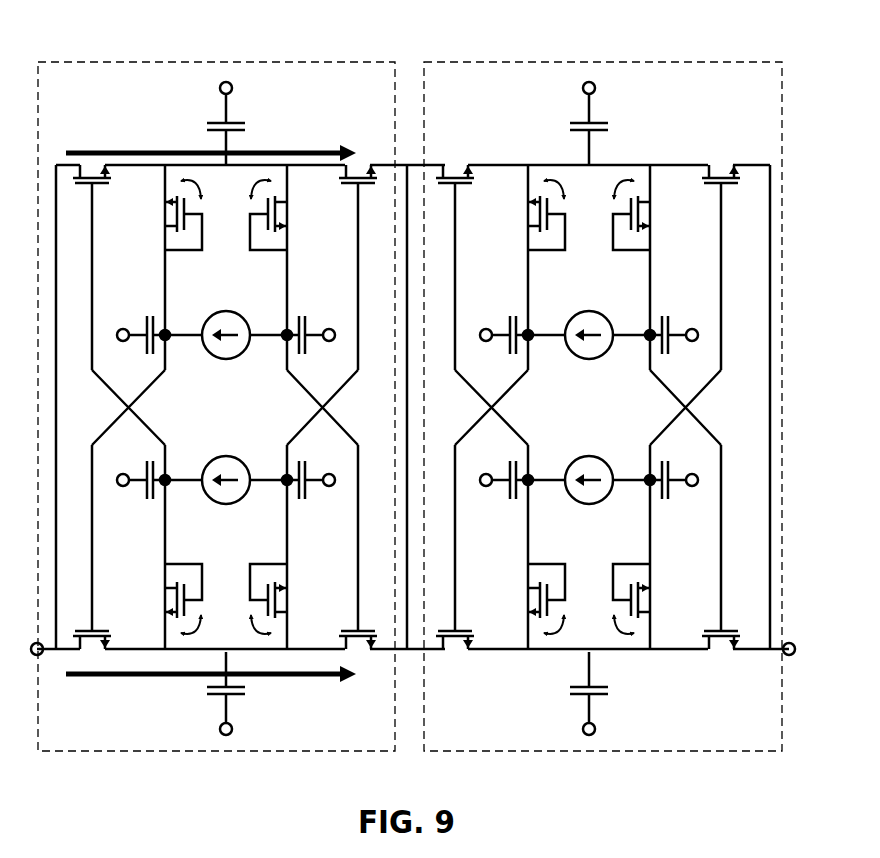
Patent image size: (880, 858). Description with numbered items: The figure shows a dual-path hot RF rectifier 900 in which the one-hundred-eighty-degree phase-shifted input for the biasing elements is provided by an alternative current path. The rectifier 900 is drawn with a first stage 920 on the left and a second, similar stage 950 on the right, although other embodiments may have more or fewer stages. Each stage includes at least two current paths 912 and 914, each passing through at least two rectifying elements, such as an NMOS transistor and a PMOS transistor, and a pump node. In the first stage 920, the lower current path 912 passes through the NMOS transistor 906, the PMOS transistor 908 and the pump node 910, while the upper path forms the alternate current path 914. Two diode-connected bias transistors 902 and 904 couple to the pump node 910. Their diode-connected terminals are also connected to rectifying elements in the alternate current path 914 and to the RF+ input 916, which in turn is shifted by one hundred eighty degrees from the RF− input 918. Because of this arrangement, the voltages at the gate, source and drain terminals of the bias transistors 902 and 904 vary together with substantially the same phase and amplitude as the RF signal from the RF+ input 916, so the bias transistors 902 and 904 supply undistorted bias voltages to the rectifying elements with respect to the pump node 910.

The dual-path hot RF rectifier 900 is at (106, 14).
The first stage 920 is at (88, 87).
The second stage 950 is at (478, 87).
The RF− input 918 is at (268, 85).
The RF+ input 916 is at (134, 508).
The current path 914 is at (290, 133).
The current path 912 is at (270, 684).
The bias transistor 902 is at (162, 598).
The bias transistor 904 is at (292, 597).
The NMOS transistor 906 is at (90, 651).
The PMOS transistor 908 is at (358, 655).
The pump node 910 is at (208, 656).